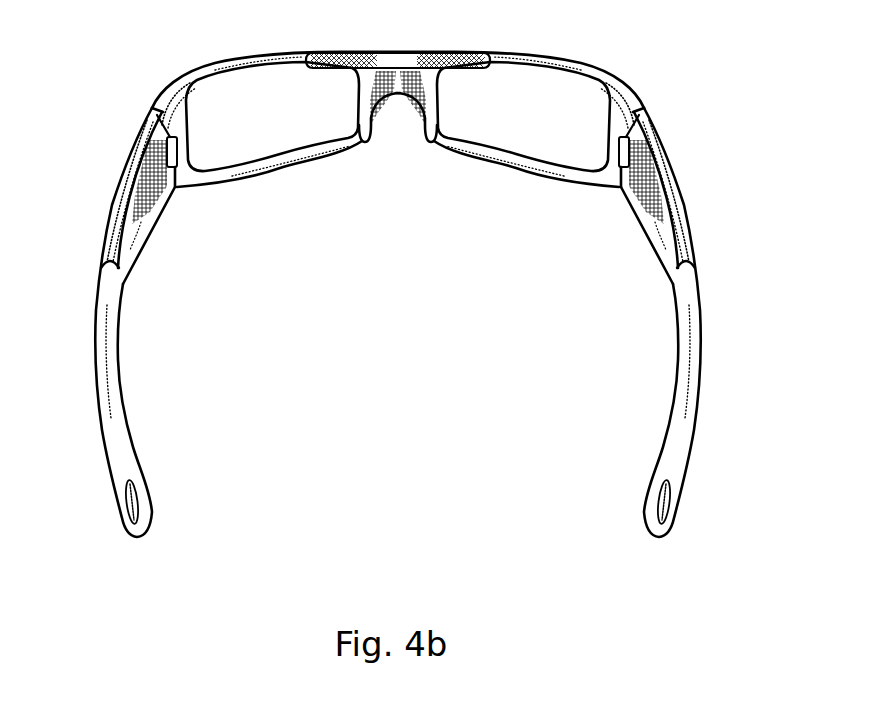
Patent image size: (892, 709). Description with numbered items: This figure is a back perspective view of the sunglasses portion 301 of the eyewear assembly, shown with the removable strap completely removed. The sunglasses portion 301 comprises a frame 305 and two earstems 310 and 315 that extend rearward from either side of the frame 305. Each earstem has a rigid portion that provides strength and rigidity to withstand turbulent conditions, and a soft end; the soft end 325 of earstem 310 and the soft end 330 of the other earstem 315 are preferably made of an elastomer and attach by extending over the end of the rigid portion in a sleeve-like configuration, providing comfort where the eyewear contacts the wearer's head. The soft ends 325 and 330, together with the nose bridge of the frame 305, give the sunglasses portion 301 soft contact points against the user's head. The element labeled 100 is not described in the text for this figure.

The sunglasses portion 301 is at (681, 137).
The frame 305 is at (168, 86).
The nose bridge module 100 is at (400, 83).
The earstem 315 is at (130, 232).
The earstem 310 is at (652, 216).
The soft end 325 is at (115, 407).
The soft end 330 is at (678, 387).